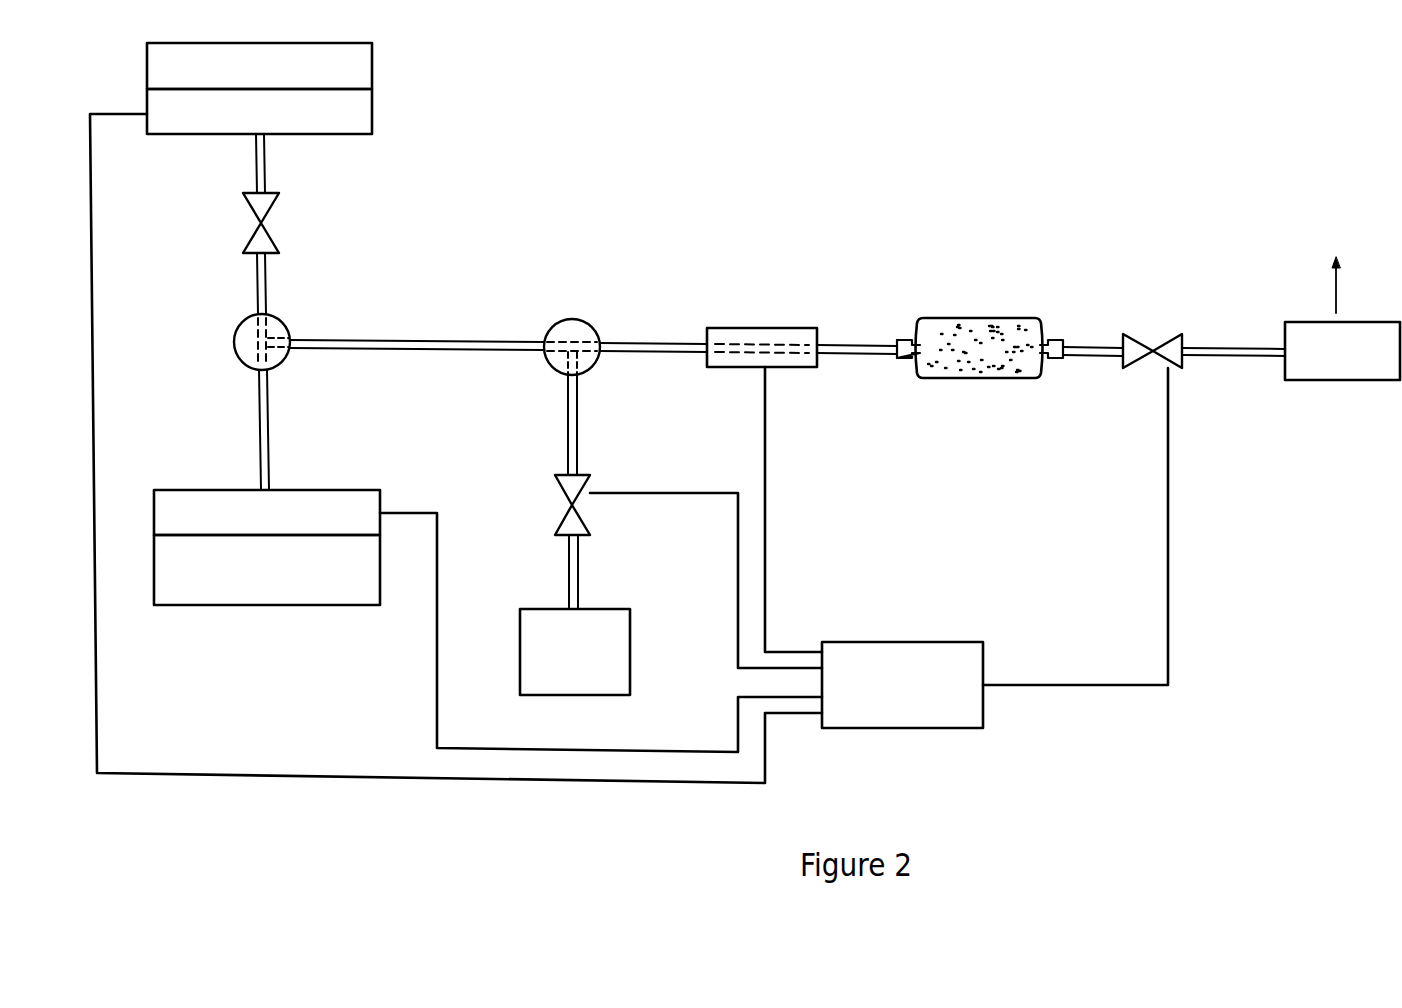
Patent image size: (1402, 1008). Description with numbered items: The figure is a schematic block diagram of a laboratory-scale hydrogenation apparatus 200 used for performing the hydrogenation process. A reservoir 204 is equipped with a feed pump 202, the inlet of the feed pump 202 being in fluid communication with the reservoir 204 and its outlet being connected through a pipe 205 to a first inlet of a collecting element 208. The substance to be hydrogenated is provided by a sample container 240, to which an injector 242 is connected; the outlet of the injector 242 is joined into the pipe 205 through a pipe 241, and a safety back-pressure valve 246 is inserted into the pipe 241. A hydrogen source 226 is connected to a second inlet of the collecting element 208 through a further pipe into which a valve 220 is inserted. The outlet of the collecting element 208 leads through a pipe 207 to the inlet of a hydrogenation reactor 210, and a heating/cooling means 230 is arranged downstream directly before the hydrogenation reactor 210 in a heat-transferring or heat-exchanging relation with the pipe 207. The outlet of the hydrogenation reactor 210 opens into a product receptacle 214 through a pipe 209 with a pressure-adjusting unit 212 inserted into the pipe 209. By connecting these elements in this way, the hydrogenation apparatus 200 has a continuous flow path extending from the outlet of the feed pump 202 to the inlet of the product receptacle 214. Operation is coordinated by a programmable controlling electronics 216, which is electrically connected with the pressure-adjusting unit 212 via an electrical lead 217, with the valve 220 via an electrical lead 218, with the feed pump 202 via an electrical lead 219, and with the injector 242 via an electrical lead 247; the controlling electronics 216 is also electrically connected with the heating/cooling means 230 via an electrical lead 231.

The hydrogenation apparatus 200 is at (231, 806).
The feed pump 202 is at (267, 512).
The reservoir 204 is at (267, 570).
The pipe 205 is at (413, 340).
The pipe 207 is at (856, 342).
The collecting element 208 is at (570, 322).
The pipe 209 is at (1090, 358).
The hydrogenation reactor 210 is at (980, 332).
The pressure-adjusting unit 212 is at (1137, 337).
The product receptacle 214 is at (1342, 319).
The controlling electronics 216 is at (902, 685).
The electrical lead 217 is at (1168, 511).
The electrical lead 218 is at (680, 493).
The electrical lead 219 is at (438, 576).
The valve 220 is at (560, 485).
The hydrogen source 226 is at (575, 615).
The heating/cooling means 230 is at (757, 333).
The electrical lead 231 is at (766, 450).
The sample container 240 is at (259, 66).
The pipe 241 is at (266, 283).
The injector 242 is at (259, 111).
The safety back-pressure valve 246 is at (266, 205).
The electrical lead 247 is at (92, 302).